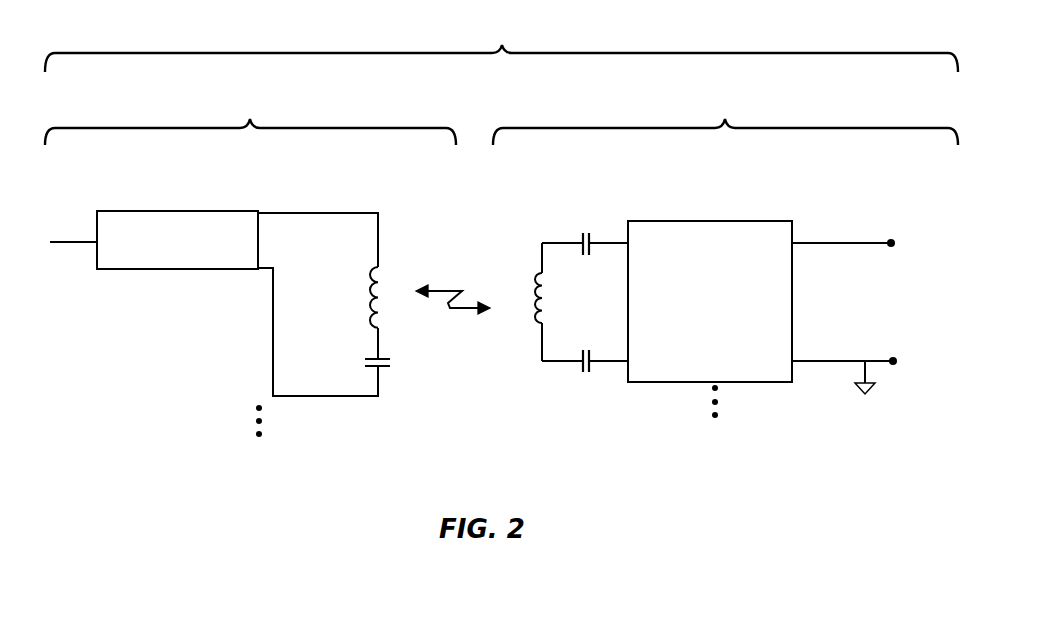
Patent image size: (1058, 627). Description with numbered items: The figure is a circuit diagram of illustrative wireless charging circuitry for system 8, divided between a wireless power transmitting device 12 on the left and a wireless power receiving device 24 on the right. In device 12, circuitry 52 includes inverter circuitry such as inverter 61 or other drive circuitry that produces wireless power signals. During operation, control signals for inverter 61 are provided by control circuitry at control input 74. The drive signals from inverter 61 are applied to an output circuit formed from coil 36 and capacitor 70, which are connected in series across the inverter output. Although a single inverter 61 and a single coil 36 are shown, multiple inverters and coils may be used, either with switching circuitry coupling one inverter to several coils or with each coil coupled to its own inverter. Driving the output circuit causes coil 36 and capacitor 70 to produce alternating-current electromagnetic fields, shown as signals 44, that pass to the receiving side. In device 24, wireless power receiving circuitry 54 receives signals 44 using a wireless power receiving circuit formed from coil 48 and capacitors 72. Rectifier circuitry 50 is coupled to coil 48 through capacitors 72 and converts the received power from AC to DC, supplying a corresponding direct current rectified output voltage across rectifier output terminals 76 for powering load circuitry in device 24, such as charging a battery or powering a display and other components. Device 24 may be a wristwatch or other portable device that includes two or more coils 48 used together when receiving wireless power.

The system 8 is at (501, 45).
The device 12 is at (250, 119).
The device 24 is at (725, 119).
The inverter 61 is at (178, 211).
The control input 74 is at (68, 241).
The coil 36 is at (390, 263).
The capacitor 70 is at (402, 374).
The signals 44 is at (455, 290).
The circuitry 52 is at (216, 381).
The coil 48 is at (531, 331).
The capacitor 72 is at (591, 219).
The rectifier circuitry 50 is at (703, 221).
The wireless power receiving circuitry 54 is at (666, 424).
The rectifier output terminals 76 is at (893, 245).